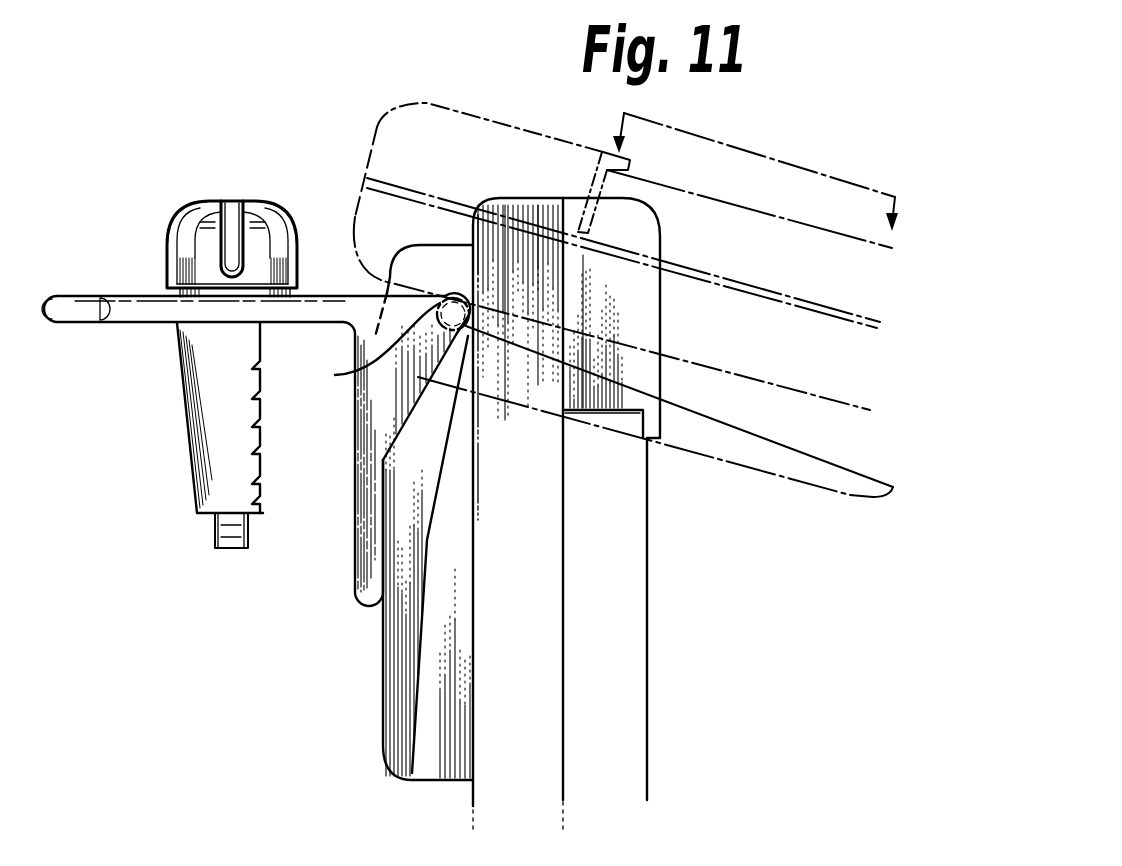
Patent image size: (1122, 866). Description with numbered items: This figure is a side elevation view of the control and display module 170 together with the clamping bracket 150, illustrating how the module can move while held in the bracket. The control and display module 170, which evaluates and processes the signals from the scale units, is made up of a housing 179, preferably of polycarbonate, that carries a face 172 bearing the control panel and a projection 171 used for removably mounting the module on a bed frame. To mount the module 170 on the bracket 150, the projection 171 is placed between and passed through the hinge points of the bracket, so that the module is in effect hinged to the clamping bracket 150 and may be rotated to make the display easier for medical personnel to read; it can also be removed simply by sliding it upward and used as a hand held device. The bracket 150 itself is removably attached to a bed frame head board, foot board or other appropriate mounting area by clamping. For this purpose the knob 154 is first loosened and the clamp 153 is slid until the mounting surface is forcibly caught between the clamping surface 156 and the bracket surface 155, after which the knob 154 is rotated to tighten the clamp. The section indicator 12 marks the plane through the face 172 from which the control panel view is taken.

The section line 12- 12 is at (740, 171).
The clamping bracket 150 is at (124, 266).
The clamp 153 is at (190, 425).
The knob 154 is at (183, 222).
The bracket surface 155 is at (353, 497).
The clamping surface 156 is at (263, 432).
The control and display module 170 is at (371, 104).
The projection 171 is at (780, 468).
The face 172 is at (728, 197).
The housing 179 is at (470, 140).